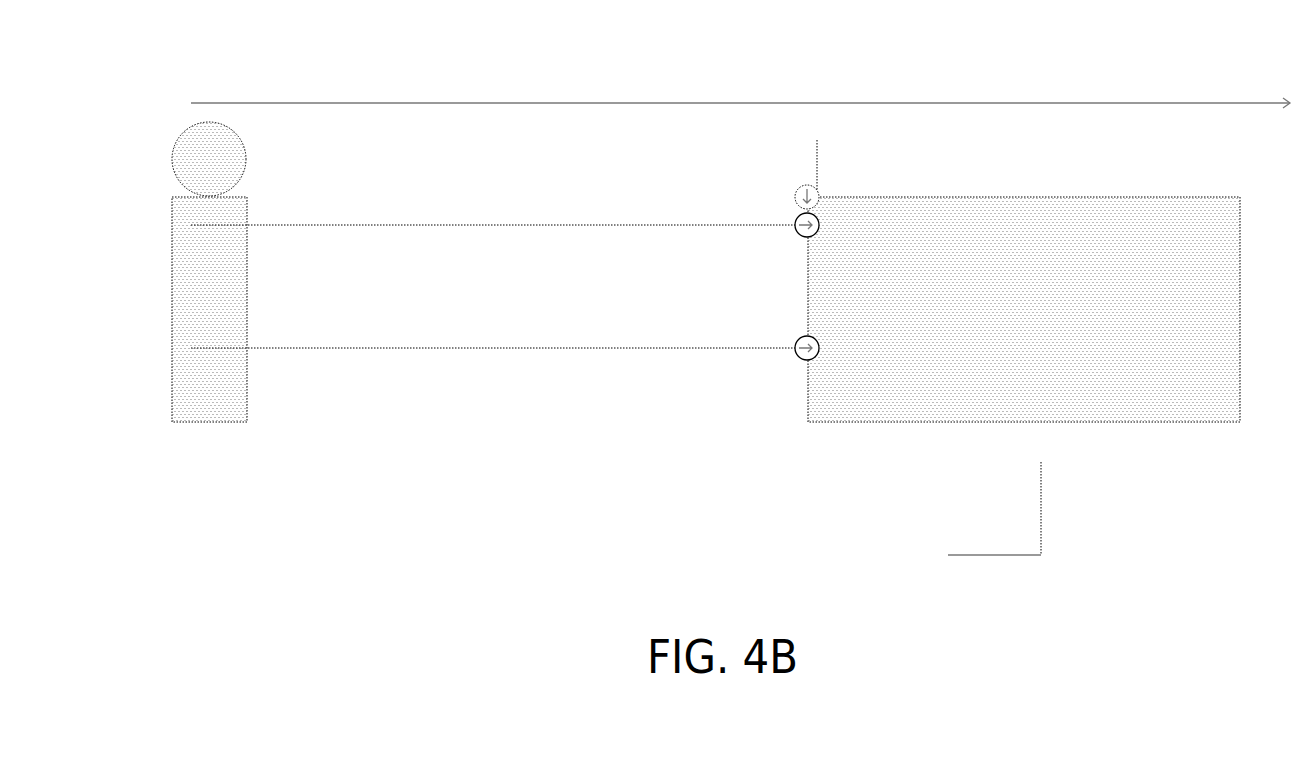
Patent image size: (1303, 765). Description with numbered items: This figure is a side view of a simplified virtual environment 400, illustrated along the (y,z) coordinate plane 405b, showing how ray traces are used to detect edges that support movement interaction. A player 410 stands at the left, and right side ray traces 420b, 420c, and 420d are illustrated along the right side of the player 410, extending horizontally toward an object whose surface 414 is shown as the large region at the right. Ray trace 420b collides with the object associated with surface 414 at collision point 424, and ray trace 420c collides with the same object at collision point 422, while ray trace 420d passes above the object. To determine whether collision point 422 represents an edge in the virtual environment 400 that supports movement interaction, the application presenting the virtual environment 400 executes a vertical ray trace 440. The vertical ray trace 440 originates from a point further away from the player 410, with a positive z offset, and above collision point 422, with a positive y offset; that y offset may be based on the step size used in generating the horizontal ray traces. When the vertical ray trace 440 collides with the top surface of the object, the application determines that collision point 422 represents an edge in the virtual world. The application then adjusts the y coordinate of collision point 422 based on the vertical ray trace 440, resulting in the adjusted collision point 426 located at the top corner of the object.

The virtual environment 400 is at (293, 33).
The player 410 is at (172, 299).
The surface 414 is at (1043, 320).
The right side ray trace 420b is at (358, 350).
The right side ray trace 420c is at (360, 226).
The right side ray trace 420d is at (369, 103).
The collision point 422 is at (820, 221).
The collision point 424 is at (820, 344).
The adjusted collision point 426 is at (800, 188).
The vertical ray trace 440 is at (820, 158).
The (y,z) coordinate plane 405b is at (1043, 507).